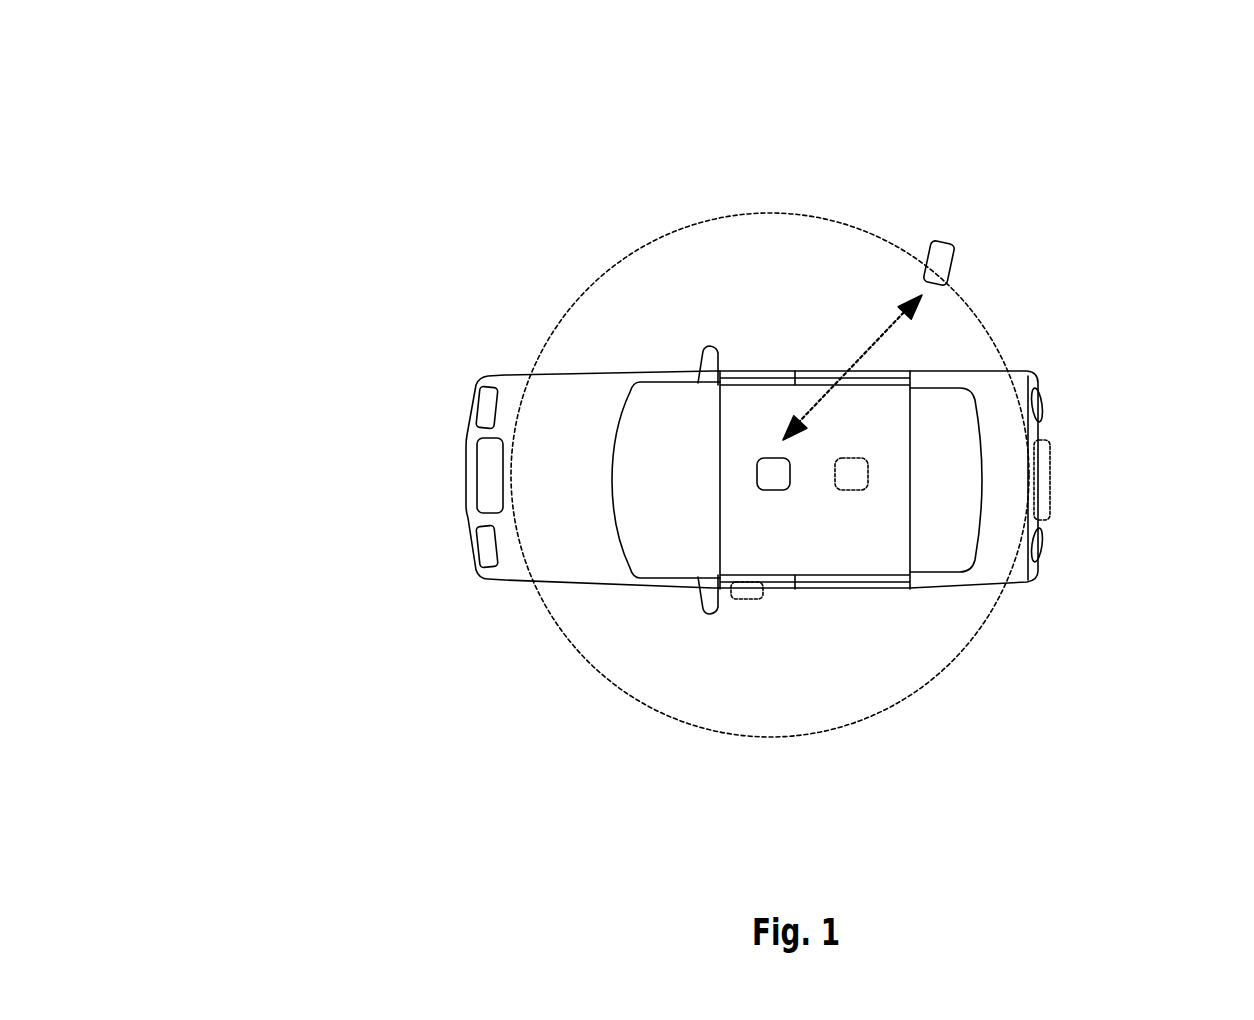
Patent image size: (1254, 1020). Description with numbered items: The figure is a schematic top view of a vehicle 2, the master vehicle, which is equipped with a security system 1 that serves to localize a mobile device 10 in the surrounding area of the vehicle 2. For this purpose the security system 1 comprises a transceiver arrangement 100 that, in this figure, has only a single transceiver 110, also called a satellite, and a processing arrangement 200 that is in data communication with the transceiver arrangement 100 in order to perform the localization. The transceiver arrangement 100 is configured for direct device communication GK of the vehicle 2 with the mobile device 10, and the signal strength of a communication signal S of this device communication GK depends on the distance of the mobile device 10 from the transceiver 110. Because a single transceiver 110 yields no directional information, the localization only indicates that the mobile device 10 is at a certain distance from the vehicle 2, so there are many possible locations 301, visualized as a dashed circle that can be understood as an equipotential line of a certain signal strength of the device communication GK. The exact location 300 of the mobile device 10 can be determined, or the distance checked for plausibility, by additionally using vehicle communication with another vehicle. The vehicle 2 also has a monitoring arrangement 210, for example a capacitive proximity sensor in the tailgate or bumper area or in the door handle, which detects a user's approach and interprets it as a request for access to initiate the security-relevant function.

The security system 1 is at (170, 115).
The vehicle 2 is at (508, 375).
The mobile device 10 is at (955, 260).
The transceiver arrangement 100 is at (806, 466).
The transceiver 110 is at (790, 482).
The processing arrangement 200 is at (868, 477).
The monitoring arrangement 210 is at (752, 598).
The exact location 300 is at (969, 229).
The possible locations 301 is at (612, 266).
The device communication GK is at (852, 367).
The communication signal S is at (807, 461).